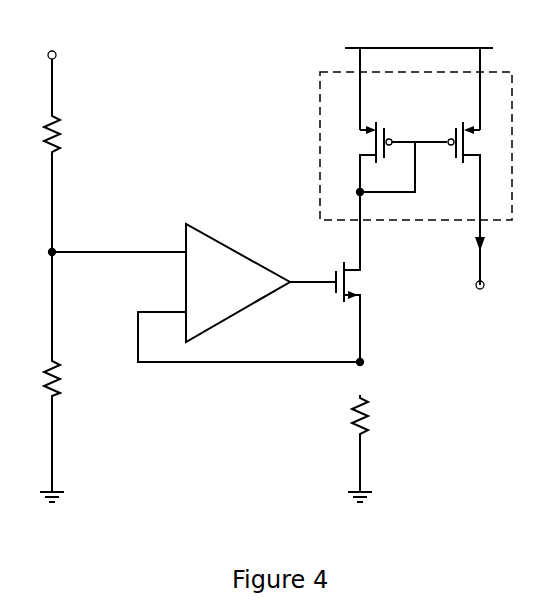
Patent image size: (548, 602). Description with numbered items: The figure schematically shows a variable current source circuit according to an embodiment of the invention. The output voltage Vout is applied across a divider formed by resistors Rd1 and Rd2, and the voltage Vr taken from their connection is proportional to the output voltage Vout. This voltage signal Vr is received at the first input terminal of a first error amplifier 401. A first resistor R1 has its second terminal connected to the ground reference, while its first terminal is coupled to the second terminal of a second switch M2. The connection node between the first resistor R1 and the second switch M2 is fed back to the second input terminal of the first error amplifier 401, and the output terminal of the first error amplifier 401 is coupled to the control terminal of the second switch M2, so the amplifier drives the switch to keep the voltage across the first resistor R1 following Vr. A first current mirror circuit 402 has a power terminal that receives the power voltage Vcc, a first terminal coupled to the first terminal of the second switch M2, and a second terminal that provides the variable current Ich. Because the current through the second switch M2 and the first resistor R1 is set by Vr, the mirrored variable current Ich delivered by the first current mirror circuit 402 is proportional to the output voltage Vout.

The first error amplifier 401 is at (238, 283).
The first current mirror circuit 402 is at (320, 147).
The output voltage Vout is at (51, 70).
The resistor Rd1 is at (72, 135).
The resistor Rd2 is at (72, 378).
The voltage signal Vr is at (119, 238).
The second switch M2 is at (366, 291).
The first resistor R1 is at (376, 417).
The power voltage Vcc is at (397, 50).
The variable current Ich is at (496, 263).